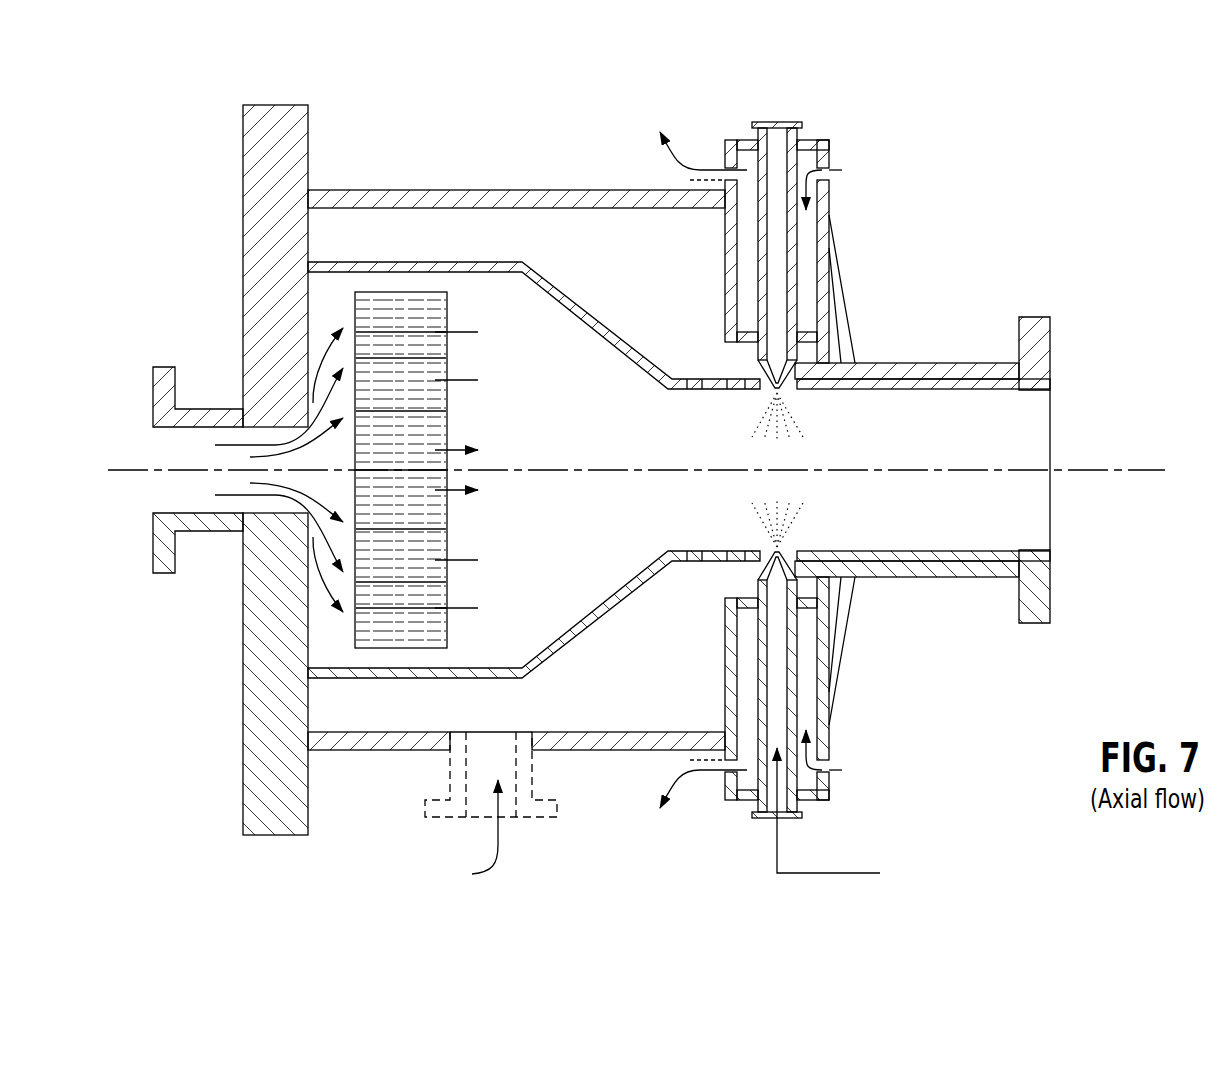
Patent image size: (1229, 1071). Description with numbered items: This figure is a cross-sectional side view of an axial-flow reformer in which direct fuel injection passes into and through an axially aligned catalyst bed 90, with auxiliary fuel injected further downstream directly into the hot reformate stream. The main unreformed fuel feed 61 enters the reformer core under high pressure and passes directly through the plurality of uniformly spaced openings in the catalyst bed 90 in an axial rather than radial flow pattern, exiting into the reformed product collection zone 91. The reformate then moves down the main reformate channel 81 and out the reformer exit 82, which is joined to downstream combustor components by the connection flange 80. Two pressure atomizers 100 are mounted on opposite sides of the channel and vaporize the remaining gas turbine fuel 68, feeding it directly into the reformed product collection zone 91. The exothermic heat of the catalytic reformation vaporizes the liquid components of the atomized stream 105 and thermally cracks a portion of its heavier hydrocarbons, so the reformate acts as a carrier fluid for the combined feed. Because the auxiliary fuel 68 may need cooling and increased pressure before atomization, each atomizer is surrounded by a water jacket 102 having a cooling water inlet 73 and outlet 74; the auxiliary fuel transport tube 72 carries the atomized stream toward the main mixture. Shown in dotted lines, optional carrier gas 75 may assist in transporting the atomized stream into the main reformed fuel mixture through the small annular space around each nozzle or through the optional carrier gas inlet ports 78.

The main unreformed fuel feed 61 is at (210, 488).
The auxiliary gas turbine fuel 68 is at (830, 810).
The auxiliary fuel transport tube 72 is at (565, 296).
The cooling water inlet 73 is at (829, 170).
The cooling water outlet 74 is at (691, 472).
The carrier gas 75 is at (491, 813).
The carrier gas inlet ports 78 is at (733, 373).
The connection flange 80 is at (1035, 367).
The main reformate channel 81 is at (642, 461).
The reformer exit 82 is at (1098, 452).
The catalyst bed 90 is at (402, 411).
The reformed product collection zone 91 is at (572, 501).
The pressure atomizers 100 is at (770, 130).
The water jacket 102 is at (728, 233).
The atomized stream 105 is at (793, 401).